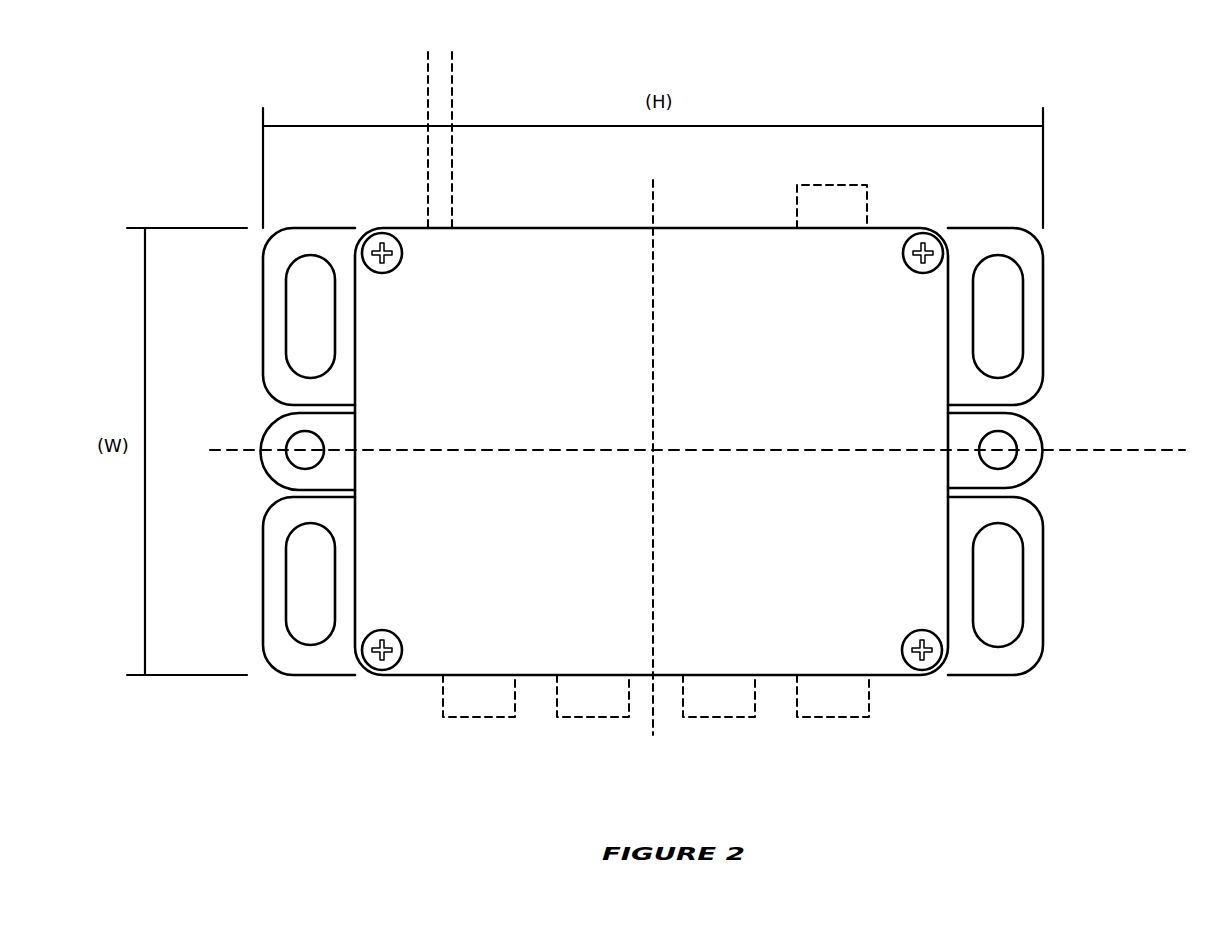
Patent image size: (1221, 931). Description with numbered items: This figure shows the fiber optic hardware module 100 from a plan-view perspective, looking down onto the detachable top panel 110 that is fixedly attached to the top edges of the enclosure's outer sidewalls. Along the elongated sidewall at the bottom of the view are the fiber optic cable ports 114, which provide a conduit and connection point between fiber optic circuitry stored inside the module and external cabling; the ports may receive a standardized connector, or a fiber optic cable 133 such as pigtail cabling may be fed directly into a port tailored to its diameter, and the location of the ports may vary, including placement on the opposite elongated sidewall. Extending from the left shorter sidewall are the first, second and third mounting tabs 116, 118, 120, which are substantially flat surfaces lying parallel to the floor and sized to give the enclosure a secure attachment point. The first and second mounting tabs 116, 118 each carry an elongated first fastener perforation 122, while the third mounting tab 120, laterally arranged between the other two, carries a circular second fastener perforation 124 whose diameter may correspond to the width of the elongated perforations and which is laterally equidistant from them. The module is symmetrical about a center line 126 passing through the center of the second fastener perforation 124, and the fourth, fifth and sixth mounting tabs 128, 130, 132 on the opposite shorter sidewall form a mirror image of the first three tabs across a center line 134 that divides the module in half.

The fiber optic hardware module 100 is at (226, 74).
The detachable top panel 110 is at (438, 640).
The fiber optic cable ports 114 is at (452, 228).
The first mounting tab 116 is at (263, 572).
The second mounting tab 118 is at (263, 310).
The third mounting tab 120 is at (262, 440).
The first fastener perforation 122 is at (305, 272).
The second fastener perforation 124 is at (298, 456).
The center line 126 is at (1147, 449).
The fourth mounting tab 128 is at (1044, 570).
The fifth mounting tab 130 is at (1043, 312).
The sixth mounting tab 132 is at (1044, 440).
The fiber optic cable 133 is at (452, 84).
The center line 134 is at (655, 735).